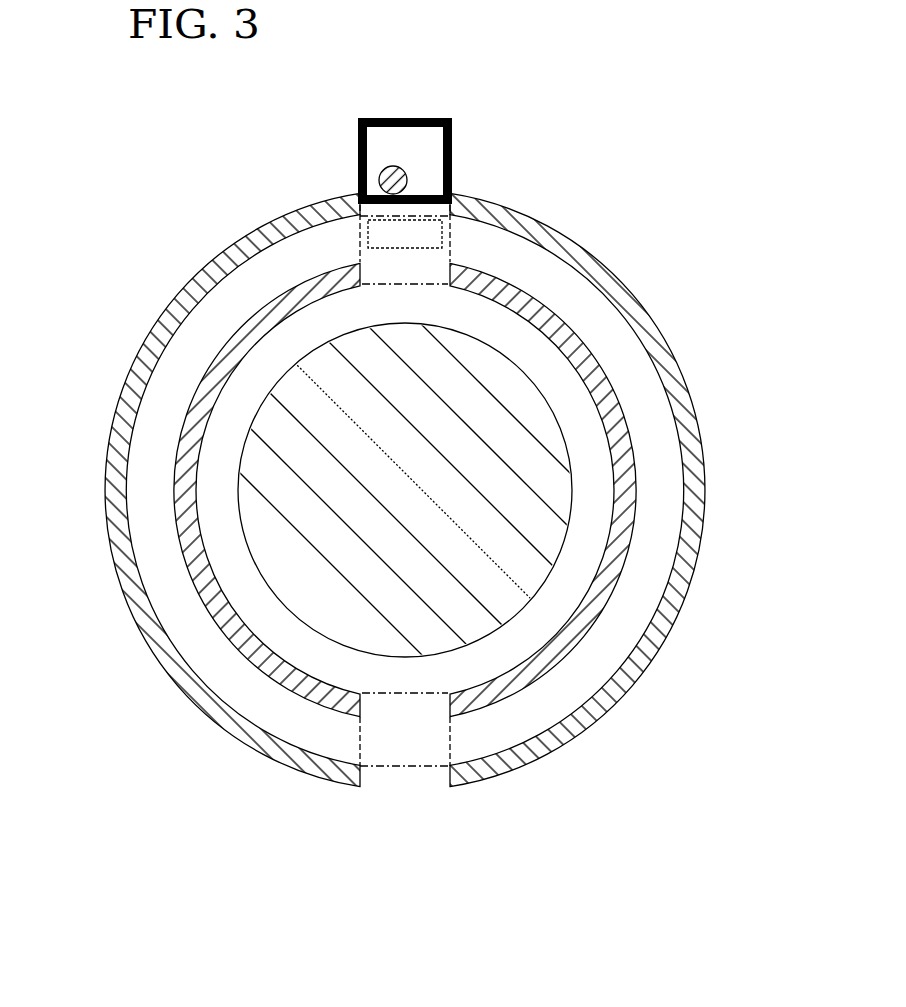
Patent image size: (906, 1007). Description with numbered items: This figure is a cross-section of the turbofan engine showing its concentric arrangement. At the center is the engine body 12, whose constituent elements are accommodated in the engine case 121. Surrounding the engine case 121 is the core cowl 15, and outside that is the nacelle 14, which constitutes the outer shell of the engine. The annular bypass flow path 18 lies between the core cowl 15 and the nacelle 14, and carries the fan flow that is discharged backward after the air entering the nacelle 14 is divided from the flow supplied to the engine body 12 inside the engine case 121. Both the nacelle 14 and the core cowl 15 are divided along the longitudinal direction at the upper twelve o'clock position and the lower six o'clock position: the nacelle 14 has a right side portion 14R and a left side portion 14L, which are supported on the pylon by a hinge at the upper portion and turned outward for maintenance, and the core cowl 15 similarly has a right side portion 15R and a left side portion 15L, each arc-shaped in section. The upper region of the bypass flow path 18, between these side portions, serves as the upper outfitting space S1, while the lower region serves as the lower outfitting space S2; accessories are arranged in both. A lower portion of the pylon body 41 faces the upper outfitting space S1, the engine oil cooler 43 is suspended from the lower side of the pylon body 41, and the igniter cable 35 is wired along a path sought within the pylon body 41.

The engine body 12 is at (477, 490).
The engine case 121 is at (548, 390).
The nacelle 14 is at (398, 489).
The right side portion 14R is at (118, 589).
The left side portion 14L is at (693, 600).
The core cowl 15 is at (458, 525).
The right side portion 15R is at (268, 689).
The left side portion 15L is at (553, 672).
The bypass flow path 18 is at (222, 311).
The igniter cable 35 is at (378, 180).
The pylon body 41 is at (420, 118).
The engine oil cooler 43 is at (418, 232).
The upper outfitting space S1 is at (448, 233).
The lower outfitting space S2 is at (360, 747).